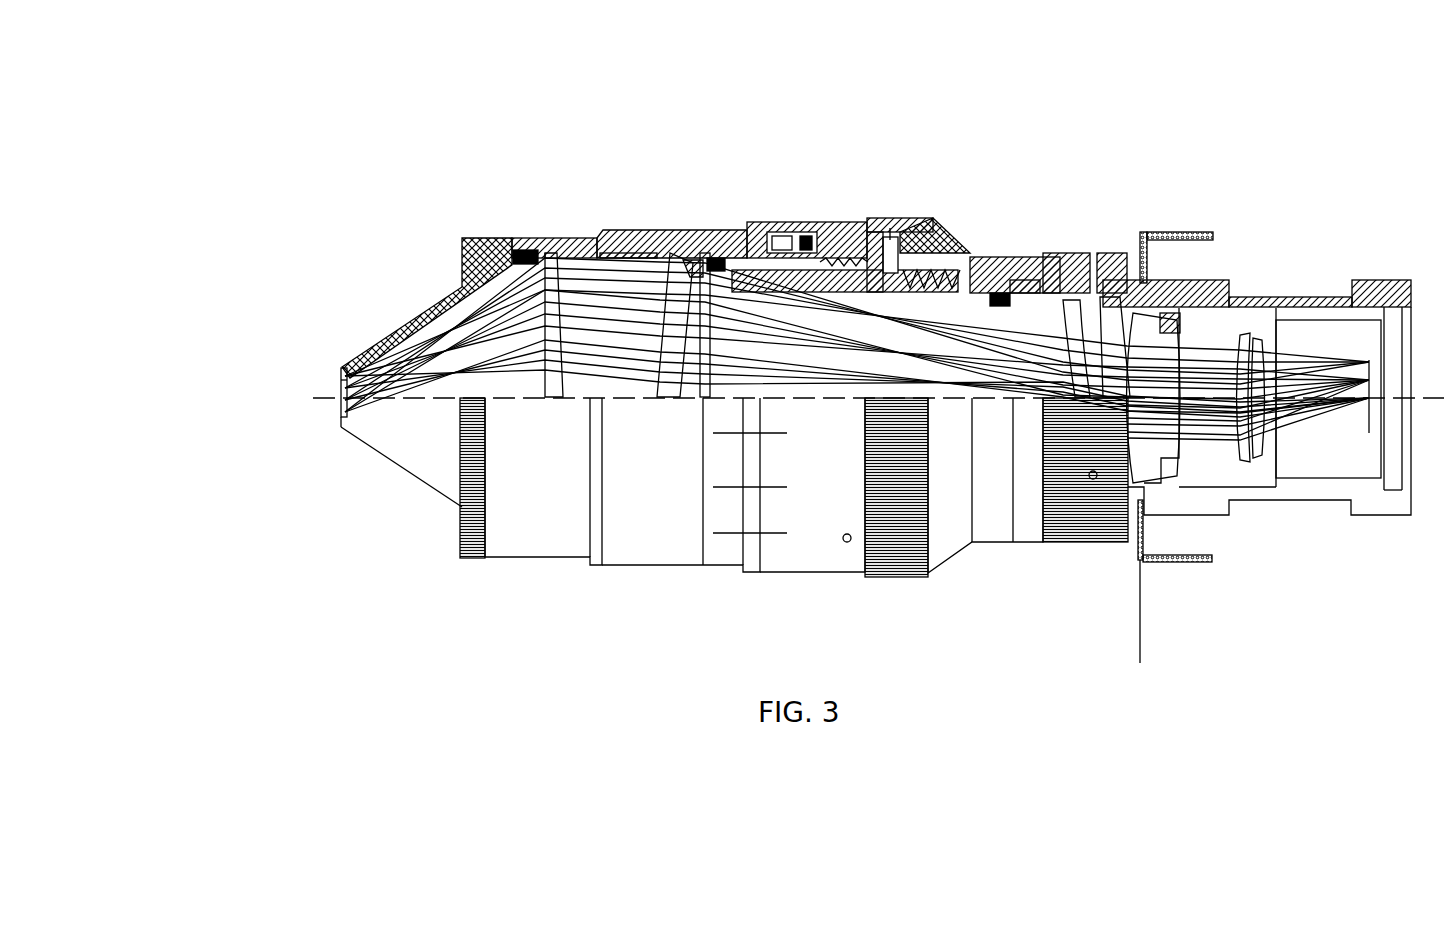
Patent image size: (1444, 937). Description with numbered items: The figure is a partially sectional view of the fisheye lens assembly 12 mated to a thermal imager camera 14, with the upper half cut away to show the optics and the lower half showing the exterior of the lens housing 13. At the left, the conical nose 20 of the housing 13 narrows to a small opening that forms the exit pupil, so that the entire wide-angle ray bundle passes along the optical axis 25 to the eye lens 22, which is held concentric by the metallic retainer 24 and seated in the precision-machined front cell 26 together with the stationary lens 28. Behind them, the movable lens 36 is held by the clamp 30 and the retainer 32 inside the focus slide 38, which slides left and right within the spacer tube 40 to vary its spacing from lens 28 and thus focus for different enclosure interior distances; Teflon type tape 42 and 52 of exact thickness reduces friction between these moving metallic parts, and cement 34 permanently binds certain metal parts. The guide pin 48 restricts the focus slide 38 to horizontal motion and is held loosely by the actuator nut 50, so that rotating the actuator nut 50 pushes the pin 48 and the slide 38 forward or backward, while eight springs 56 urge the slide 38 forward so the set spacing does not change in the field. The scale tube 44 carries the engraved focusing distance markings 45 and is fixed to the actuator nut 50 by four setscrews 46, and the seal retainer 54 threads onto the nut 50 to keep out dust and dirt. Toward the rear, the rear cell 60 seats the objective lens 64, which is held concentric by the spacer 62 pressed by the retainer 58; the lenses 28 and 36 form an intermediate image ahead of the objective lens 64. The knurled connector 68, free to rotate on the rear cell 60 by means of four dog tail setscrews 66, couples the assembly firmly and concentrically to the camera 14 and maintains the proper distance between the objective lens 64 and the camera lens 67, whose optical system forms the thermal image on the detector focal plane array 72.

The fisheye lens assembly 12 is at (350, 614).
The lens housing 13 is at (776, 552).
The thermal imager camera 14 is at (1257, 383).
The nose portion 20 is at (306, 305).
The eye lens 22 is at (384, 241).
The retainer 24 is at (454, 184).
The optical axis 25 is at (262, 324).
The front cell 26 is at (562, 154).
The lens 28 is at (568, 181).
The clamp 30 is at (611, 250).
The retainer 32 is at (626, 224).
The cement 34 is at (688, 250).
The lens 36 is at (697, 165).
The focus slide 38 is at (845, 198).
The spacer tube 40 is at (778, 151).
The Teflon type tape 42 is at (832, 153).
The scale tube 44 is at (850, 185).
The setscrews 46 is at (880, 211).
The pin 48 is at (917, 146).
The actuator nut 50 is at (918, 198).
The Teflon type tape 52 is at (938, 218).
The seal retainer 54 is at (1015, 173).
The springs 56 is at (1018, 205).
The retainer 58 is at (1029, 221).
The rear cell 60 is at (1076, 173).
The spacer 62 is at (1092, 250).
The objective lens 64 is at (1113, 221).
The setscrews 66 is at (1165, 225).
The camera lens 67 is at (1261, 320).
The connector 68 is at (1174, 293).
The detector focal plane array 72 is at (1328, 356).
The focusing distance marking 45 is at (753, 487).